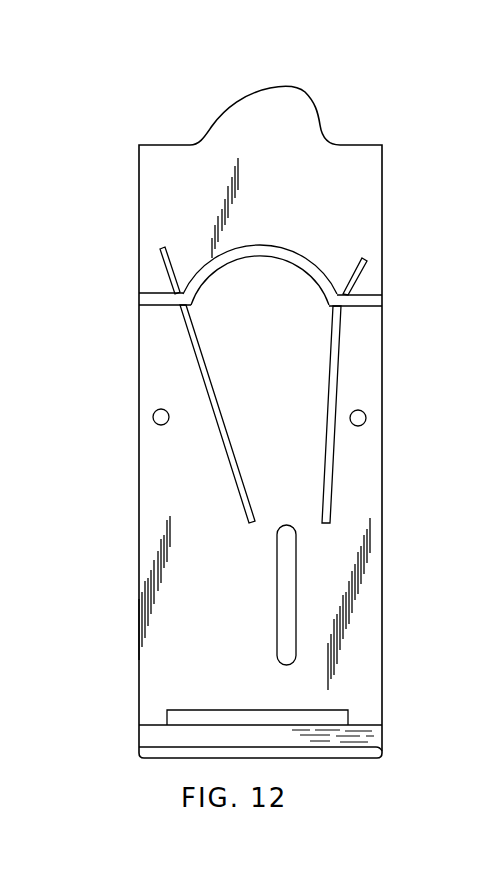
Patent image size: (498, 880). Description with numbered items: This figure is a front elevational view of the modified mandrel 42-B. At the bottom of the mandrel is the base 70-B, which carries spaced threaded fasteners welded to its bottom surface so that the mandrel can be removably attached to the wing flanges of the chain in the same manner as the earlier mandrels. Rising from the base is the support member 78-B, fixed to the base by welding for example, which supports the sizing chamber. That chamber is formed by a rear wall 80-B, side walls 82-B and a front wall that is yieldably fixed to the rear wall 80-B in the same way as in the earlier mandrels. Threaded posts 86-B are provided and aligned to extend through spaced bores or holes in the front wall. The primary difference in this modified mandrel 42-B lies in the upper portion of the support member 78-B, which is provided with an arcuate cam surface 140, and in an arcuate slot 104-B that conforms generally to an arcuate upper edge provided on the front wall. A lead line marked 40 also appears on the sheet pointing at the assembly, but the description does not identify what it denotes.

The modified mandrel 42-B is at (264, 401).
The bracket 40 is at (398, 170).
The arcuate cam surface 140 is at (302, 90).
The support member 78-B is at (382, 593).
The rear wall 80-B is at (222, 340).
The arcuate slot 104-B is at (373, 298).
The side walls 82-B is at (338, 346).
The threaded posts 86-B is at (153, 415).
The base 70-B is at (147, 736).